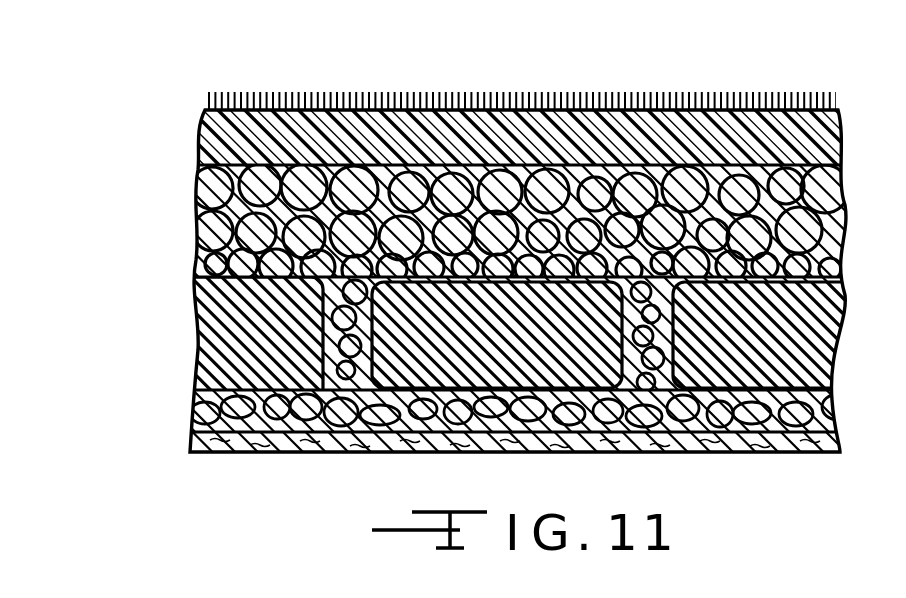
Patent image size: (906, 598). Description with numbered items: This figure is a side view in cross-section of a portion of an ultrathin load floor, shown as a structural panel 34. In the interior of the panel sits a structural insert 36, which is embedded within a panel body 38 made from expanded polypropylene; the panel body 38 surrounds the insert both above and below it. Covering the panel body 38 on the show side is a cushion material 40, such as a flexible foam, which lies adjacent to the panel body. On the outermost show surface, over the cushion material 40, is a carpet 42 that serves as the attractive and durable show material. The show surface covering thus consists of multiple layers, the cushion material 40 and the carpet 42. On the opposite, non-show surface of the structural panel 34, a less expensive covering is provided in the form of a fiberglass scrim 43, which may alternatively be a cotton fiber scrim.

The structural panel 34 is at (84, 102).
The structural insert 36 is at (212, 330).
The panel body 38 is at (205, 225).
The cushion material 40 is at (205, 142).
The carpet 42 is at (205, 100).
The fiberglass scrim 43 is at (195, 446).